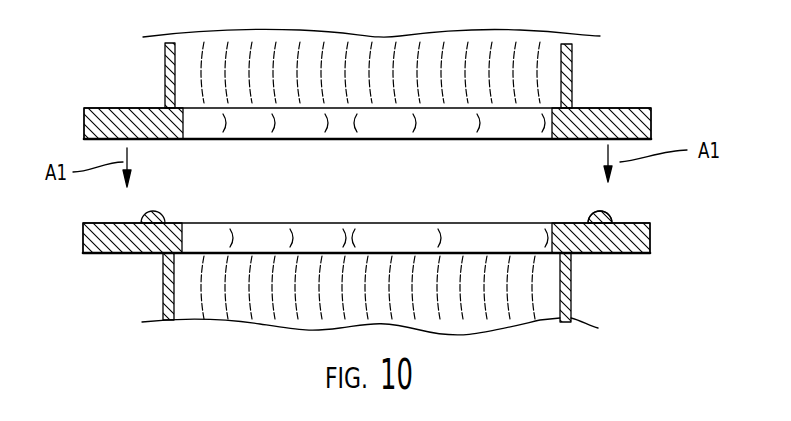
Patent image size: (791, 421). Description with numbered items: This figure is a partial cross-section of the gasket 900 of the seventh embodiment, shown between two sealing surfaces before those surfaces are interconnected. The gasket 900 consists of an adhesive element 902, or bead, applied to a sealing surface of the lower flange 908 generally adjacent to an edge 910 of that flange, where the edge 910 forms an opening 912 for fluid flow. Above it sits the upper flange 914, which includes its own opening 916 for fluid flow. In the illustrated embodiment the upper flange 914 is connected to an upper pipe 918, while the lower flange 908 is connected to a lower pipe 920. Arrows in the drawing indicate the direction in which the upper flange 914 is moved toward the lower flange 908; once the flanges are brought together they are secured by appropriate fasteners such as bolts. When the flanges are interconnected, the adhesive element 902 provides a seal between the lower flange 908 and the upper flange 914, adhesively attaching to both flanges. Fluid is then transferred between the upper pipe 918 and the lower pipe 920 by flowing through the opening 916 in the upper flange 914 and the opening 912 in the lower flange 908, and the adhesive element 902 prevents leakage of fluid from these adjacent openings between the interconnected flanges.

The gasket 900 is at (612, 205).
The adhesive element 902 is at (612, 222).
The lower flange 908 is at (645, 240).
The edge 910 is at (180, 240).
The opening 912 is at (353, 230).
The upper flange 914 is at (645, 120).
The opening 916 is at (357, 127).
The upper pipe 918 is at (540, 78).
The lower pipe 920 is at (548, 283).